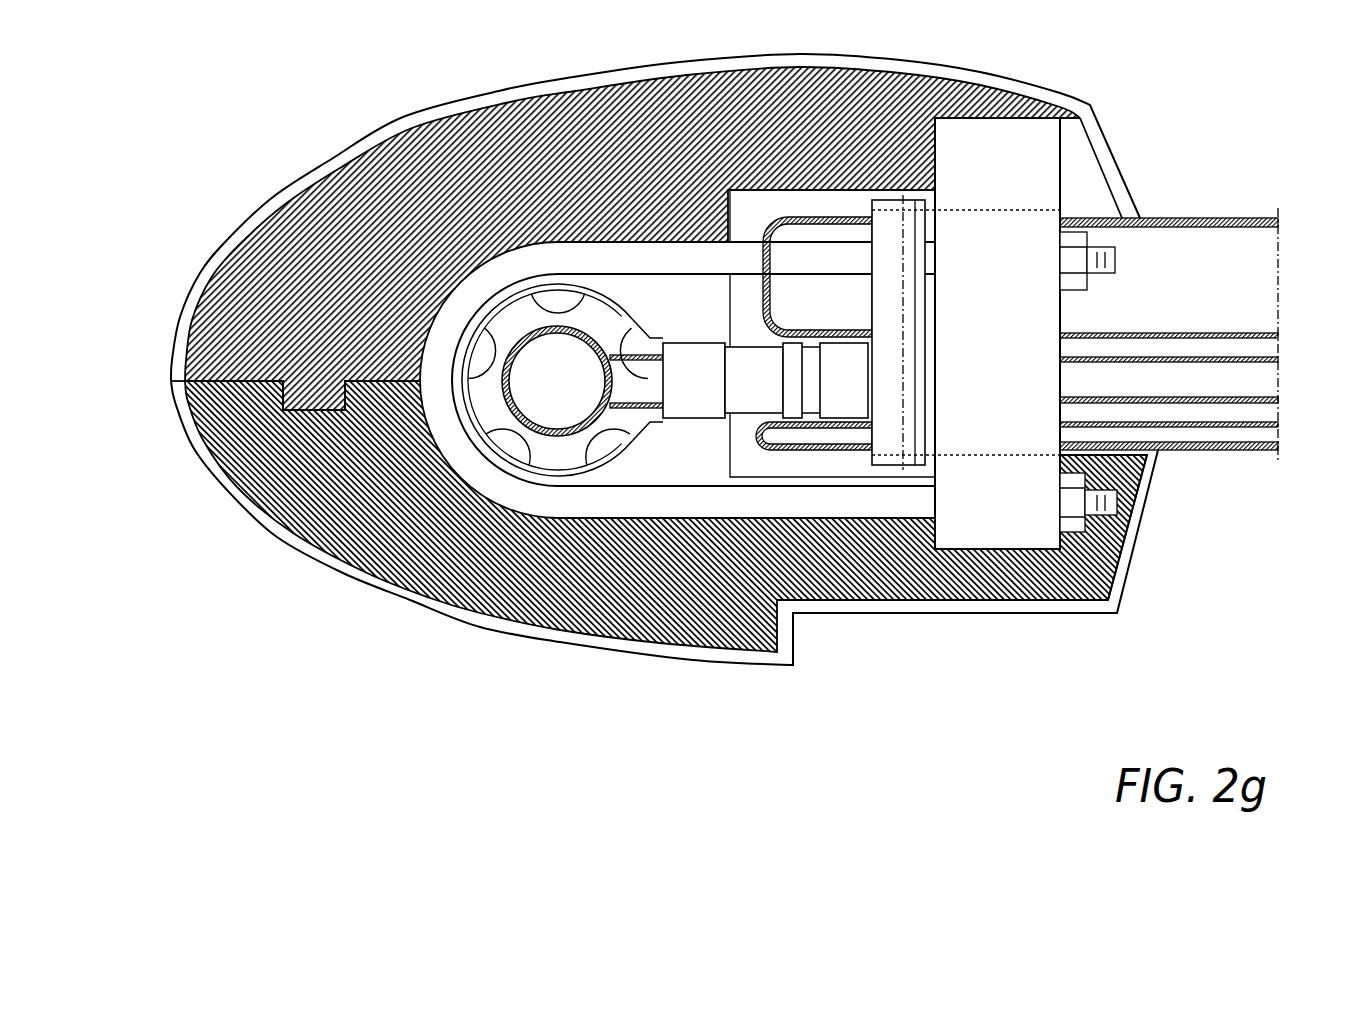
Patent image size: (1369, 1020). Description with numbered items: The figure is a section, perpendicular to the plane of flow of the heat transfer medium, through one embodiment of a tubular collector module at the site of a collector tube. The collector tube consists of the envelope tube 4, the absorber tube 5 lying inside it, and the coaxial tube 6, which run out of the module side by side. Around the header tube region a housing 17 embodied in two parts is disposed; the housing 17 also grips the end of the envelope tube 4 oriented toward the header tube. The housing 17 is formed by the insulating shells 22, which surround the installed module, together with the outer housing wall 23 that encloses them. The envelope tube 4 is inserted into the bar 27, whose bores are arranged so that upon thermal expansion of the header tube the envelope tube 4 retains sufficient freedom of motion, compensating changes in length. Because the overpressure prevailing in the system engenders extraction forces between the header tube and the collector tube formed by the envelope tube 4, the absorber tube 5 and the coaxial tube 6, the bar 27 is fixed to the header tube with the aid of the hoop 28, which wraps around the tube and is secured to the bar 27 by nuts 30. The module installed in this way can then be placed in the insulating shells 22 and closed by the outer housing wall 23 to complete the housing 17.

The envelope tube 4 is at (1250, 228).
The absorber tube 5 is at (1263, 333).
The coaxial tube 6 is at (1255, 360).
The housing 17 is at (190, 205).
The insulating shells 22 is at (222, 434).
The outer housing wall 23 is at (277, 537).
The bar 27 is at (983, 530).
The hoop 28 is at (677, 498).
The nuts 30 is at (1072, 237).